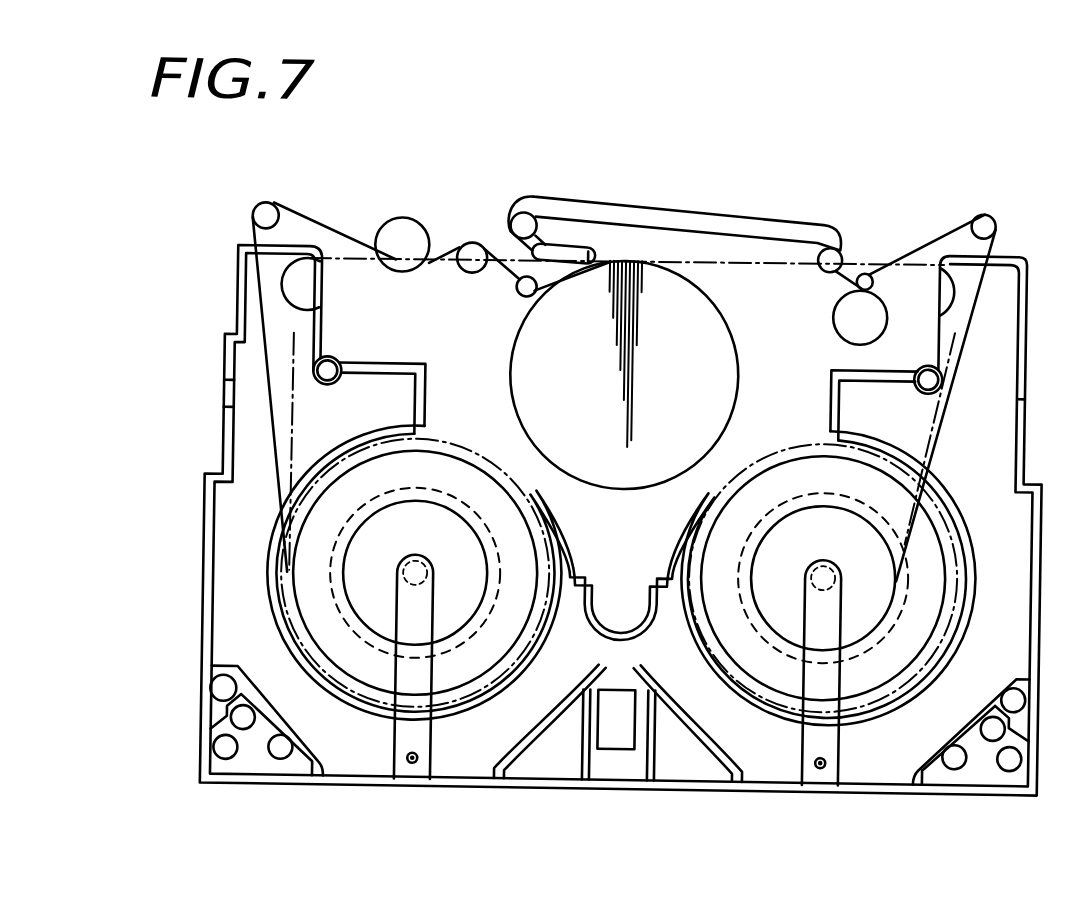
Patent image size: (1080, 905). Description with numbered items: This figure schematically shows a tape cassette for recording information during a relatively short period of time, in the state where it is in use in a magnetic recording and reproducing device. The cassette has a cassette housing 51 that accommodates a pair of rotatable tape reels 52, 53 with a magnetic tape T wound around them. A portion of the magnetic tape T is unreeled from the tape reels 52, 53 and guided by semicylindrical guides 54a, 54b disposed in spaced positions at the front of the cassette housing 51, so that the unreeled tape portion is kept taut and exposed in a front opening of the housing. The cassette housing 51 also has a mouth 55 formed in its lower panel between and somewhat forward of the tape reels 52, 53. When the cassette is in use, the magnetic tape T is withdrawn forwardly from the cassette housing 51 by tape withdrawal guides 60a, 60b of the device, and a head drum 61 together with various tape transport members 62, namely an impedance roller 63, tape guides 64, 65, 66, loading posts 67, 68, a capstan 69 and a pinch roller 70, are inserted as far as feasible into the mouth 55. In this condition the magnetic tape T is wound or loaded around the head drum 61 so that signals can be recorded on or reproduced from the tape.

The cassette housing 51 is at (562, 790).
The tape reel 52 is at (374, 696).
The tape reel 53 is at (879, 690).
The semicylindrical guide 54a is at (309, 285).
The semicylindrical guide 54b is at (944, 268).
The mouth 55 is at (758, 354).
The tape withdrawal guide 60a is at (261, 208).
The tape withdrawal guide 60b is at (986, 218).
The head drum 61 is at (653, 275).
The tape transport members 62 is at (495, 234).
The impedance roller 63 is at (397, 222).
The tape guide 64 is at (468, 245).
The tape guide 65 is at (514, 291).
The tape guide 66 is at (836, 253).
The loading post 67 is at (574, 249).
The loading post 68 is at (521, 222).
The capstan 69 is at (866, 266).
The pinch roller 70 is at (838, 309).
The magnetic tape T is at (309, 585).